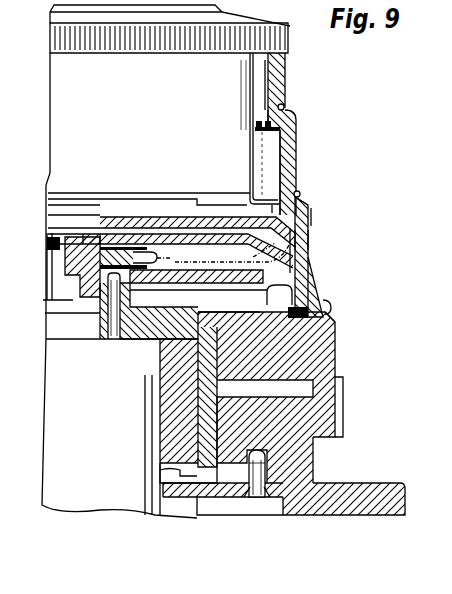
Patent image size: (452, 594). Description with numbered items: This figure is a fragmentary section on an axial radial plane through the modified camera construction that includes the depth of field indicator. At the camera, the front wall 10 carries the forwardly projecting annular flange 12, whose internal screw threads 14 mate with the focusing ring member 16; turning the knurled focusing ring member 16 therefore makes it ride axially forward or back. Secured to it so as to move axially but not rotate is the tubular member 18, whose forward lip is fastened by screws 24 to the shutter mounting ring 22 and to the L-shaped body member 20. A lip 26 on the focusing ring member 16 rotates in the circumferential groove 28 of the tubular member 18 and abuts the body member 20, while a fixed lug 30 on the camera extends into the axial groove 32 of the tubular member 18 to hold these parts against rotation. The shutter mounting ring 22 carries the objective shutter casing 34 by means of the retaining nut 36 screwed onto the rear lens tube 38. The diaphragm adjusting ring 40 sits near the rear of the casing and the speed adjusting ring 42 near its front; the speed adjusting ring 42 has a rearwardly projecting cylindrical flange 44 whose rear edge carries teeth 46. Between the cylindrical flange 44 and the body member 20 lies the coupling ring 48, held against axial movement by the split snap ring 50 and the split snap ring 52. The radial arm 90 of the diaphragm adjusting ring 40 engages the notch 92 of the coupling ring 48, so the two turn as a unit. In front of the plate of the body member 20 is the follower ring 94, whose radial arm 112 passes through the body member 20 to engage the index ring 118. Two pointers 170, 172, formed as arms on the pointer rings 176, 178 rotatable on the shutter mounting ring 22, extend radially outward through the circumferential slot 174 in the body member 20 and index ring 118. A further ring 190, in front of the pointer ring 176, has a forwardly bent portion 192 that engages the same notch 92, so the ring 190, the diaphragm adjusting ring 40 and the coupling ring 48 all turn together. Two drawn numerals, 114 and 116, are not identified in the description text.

The front wall 10 is at (371, 492).
The annular flange 12 is at (305, 460).
The internal screw threads 14 is at (230, 427).
The focusing ring member 16 is at (331, 360).
The tubular member 18 is at (162, 399).
The body member 20 is at (310, 230).
The shutter mounting ring 22 is at (218, 272).
The screws 24 is at (106, 339).
The lip 26 is at (194, 343).
The circumferential groove 28 is at (183, 323).
The fixed lug 30 is at (168, 488).
The axial groove 32 is at (172, 470).
The objective shutter casing 34 is at (255, 149).
The retaining nut 36 is at (86, 288).
The rear lens tube 38 is at (51, 339).
The diaphragm adjusting ring 40 is at (149, 217).
The speed adjusting ring 42 is at (290, 31).
The cylindrical flange 44 is at (285, 73).
The teeth 46 is at (268, 121).
The coupling ring 48 is at (298, 126).
The split snap ring 50 is at (285, 106).
The split snap ring 52 is at (300, 190).
The radial arm 90 is at (247, 210).
The notch 92 is at (280, 205).
The follower ring 94 is at (234, 326).
The radial arm 112 is at (292, 319).
The main block 114 is at (262, 321).
The chamfer 116 is at (321, 323).
The index ring 118 is at (318, 282).
The pointer 170 is at (300, 240).
The pointer 172 is at (300, 240).
The circumferential slot 174 is at (325, 300).
The pointer ring 176 is at (113, 236).
The pointer ring 178 is at (147, 258).
The ring 190 is at (170, 234).
The forwardly bent portion 192 is at (309, 212).